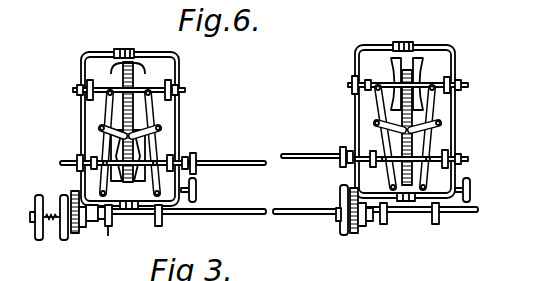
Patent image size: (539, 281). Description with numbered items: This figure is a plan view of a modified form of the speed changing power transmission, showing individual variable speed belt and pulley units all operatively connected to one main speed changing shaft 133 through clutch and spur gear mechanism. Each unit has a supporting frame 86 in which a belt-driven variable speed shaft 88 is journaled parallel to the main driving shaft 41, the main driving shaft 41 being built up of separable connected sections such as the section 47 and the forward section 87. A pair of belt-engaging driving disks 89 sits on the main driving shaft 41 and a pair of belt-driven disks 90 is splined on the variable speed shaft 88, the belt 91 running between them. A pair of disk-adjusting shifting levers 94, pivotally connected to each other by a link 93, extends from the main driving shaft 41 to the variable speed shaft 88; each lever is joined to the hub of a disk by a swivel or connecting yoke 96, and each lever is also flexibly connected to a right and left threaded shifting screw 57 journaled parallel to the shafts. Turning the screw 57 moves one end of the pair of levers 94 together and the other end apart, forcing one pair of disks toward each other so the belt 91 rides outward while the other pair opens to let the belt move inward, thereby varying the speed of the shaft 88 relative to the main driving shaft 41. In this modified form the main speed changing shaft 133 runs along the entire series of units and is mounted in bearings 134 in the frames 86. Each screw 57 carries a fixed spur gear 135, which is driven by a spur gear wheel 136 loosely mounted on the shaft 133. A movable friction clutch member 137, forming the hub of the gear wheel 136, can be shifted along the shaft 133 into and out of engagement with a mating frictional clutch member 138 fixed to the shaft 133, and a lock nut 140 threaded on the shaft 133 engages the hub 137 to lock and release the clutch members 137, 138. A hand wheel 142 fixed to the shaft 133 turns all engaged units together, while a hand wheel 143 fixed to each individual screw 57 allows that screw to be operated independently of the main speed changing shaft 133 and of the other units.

The main driving shaft 41 is at (245, 163).
The shaft section 47 is at (188, 160).
The shifting screw 57 is at (190, 211).
The supporting frame 86 is at (130, 52).
The forward shaft section 87 is at (306, 166).
The variable speed shaft 88 is at (180, 88).
The belt-engaging driving disk 89 is at (80, 160).
The belt-driven disk 90 is at (122, 62).
The belt 91 is at (112, 150).
The link 93 is at (104, 122).
The shifting lever 94 is at (104, 112).
The connecting yoke 96 is at (108, 84).
The main speed changing shaft 133 is at (218, 216).
The bearing 134 is at (150, 224).
The spur gear 135 is at (72, 196).
The spur gear wheel 136 is at (77, 236).
The friction clutch member 137 is at (361, 228).
The mating frictional clutch member 138 is at (369, 222).
The lock nut 140 is at (38, 242).
The hand wheel 142 is at (34, 238).
The hand wheel 143 is at (198, 190).